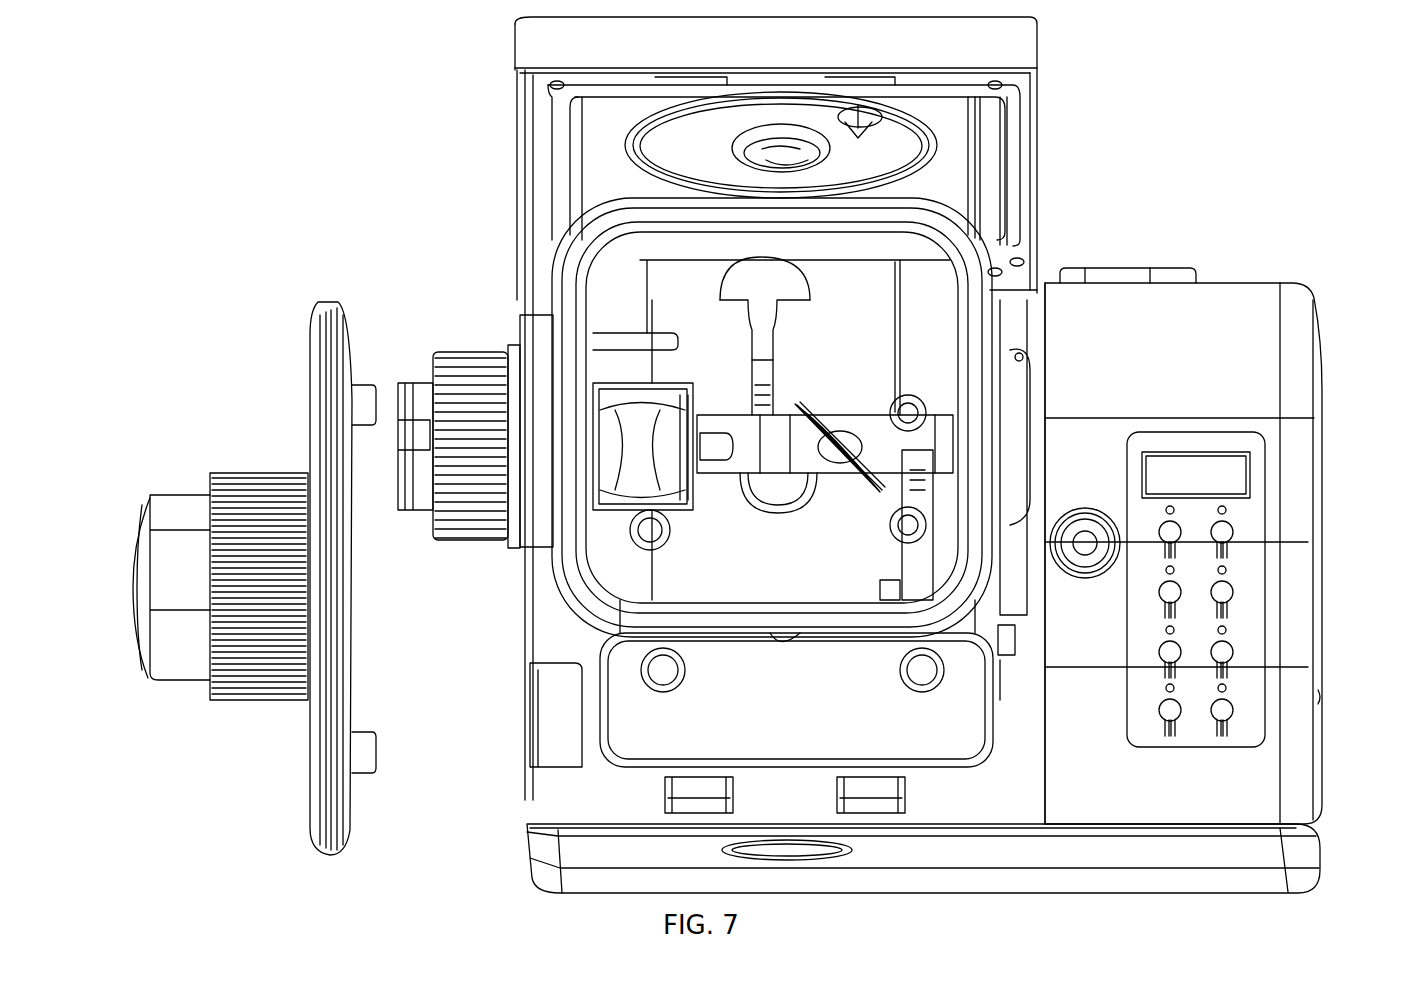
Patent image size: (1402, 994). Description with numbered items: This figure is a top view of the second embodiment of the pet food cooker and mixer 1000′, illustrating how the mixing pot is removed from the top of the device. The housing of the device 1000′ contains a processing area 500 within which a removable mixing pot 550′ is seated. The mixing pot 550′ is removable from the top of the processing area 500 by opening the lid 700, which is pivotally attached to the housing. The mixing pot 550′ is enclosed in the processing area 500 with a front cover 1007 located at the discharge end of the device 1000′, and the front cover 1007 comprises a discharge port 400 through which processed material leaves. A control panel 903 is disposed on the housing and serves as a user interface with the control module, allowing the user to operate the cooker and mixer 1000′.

The pet food cooker and mixer 1000′ is at (1228, 226).
The lid 700 is at (517, 118).
The mixing pot 550′ is at (633, 287).
The processing area 500 is at (700, 716).
The discharge port 400 is at (150, 495).
The front cover 1007 is at (309, 350).
The control panel 903 is at (1257, 563).